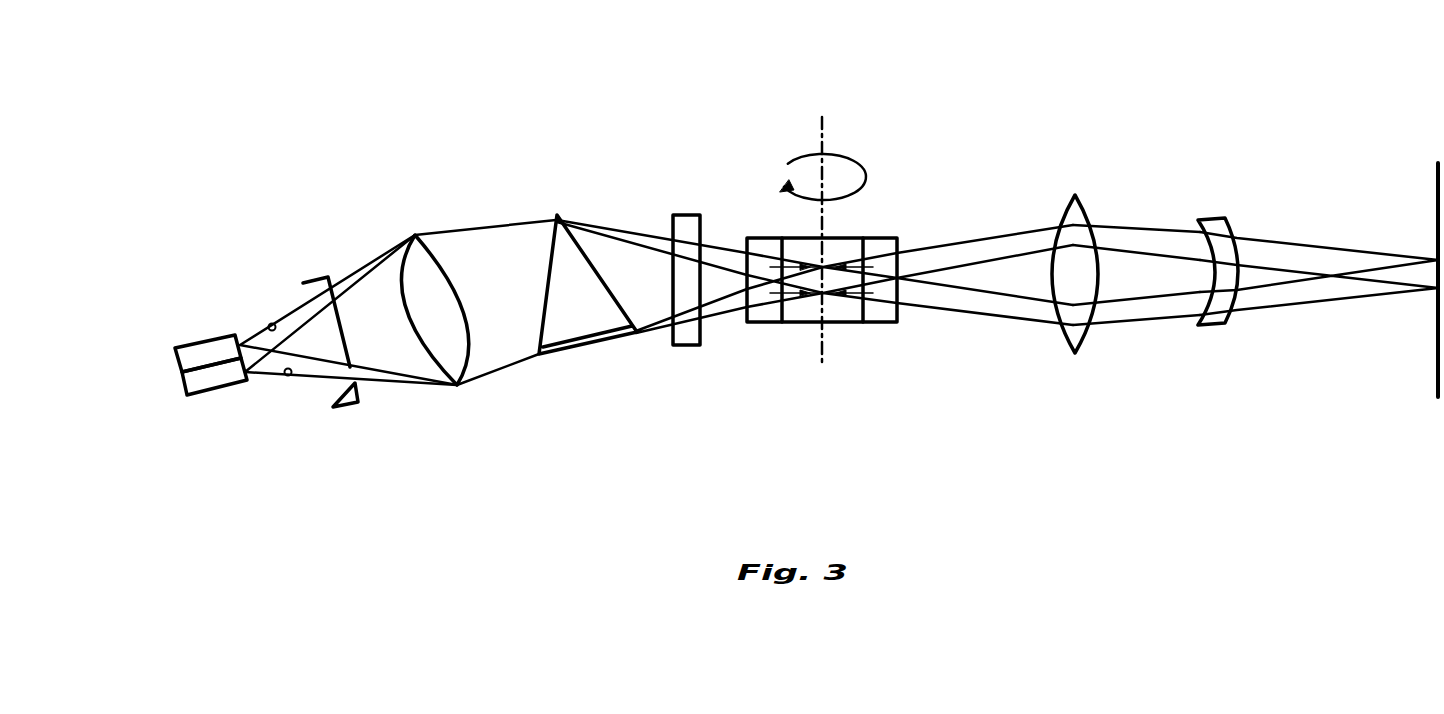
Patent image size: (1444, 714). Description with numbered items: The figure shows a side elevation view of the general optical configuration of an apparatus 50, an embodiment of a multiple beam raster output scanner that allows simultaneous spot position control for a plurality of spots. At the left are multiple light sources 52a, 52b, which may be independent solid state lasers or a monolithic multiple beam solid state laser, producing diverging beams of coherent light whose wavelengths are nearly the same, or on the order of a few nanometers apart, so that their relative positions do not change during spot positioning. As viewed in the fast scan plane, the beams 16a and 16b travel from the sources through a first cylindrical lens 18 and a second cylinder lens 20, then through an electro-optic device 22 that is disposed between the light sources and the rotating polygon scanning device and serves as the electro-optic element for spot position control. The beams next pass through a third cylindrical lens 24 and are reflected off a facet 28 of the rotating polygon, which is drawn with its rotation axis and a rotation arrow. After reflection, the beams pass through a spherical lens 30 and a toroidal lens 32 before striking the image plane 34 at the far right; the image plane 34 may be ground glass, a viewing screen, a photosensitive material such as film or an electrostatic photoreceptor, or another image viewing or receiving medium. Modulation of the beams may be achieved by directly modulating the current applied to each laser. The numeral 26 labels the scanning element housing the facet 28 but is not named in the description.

The beam 16a is at (270, 324).
The beam 16b is at (289, 376).
The first cylindrical lens 18 is at (320, 292).
The second cylinder lens 20 is at (416, 235).
The electro-optic device 22 is at (556, 213).
The third cylindrical lens 24 is at (685, 230).
The cell 26 is at (770, 323).
The facet 28 is at (852, 248).
The spherical lens 30 is at (1075, 338).
The toroidal lens 32 is at (1216, 325).
The image plane 34 is at (1436, 340).
The apparatus 50 is at (1150, 82).
The light source 52a is at (190, 357).
The light source 52b is at (202, 385).